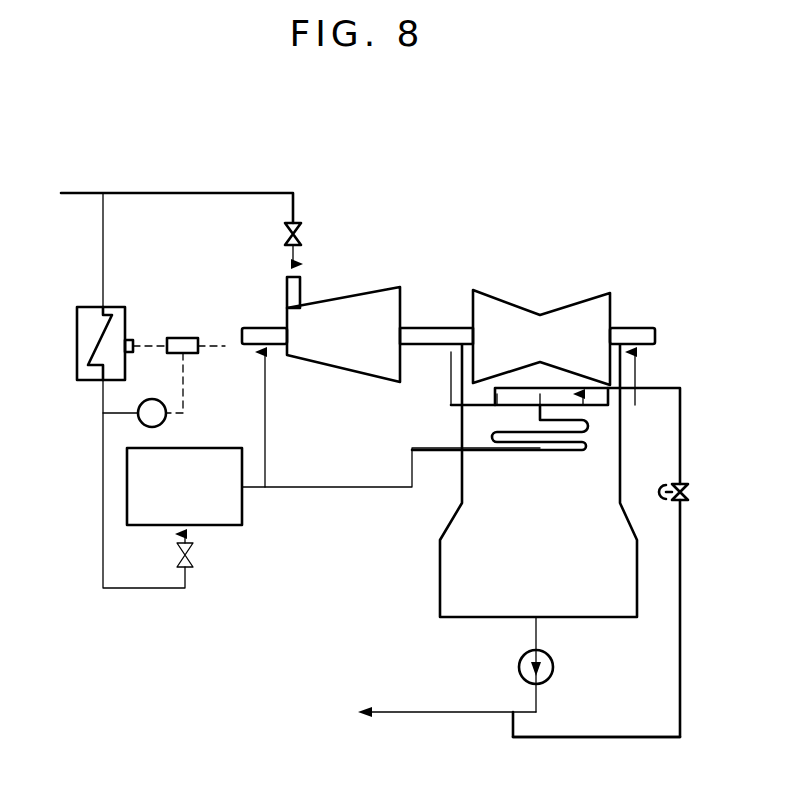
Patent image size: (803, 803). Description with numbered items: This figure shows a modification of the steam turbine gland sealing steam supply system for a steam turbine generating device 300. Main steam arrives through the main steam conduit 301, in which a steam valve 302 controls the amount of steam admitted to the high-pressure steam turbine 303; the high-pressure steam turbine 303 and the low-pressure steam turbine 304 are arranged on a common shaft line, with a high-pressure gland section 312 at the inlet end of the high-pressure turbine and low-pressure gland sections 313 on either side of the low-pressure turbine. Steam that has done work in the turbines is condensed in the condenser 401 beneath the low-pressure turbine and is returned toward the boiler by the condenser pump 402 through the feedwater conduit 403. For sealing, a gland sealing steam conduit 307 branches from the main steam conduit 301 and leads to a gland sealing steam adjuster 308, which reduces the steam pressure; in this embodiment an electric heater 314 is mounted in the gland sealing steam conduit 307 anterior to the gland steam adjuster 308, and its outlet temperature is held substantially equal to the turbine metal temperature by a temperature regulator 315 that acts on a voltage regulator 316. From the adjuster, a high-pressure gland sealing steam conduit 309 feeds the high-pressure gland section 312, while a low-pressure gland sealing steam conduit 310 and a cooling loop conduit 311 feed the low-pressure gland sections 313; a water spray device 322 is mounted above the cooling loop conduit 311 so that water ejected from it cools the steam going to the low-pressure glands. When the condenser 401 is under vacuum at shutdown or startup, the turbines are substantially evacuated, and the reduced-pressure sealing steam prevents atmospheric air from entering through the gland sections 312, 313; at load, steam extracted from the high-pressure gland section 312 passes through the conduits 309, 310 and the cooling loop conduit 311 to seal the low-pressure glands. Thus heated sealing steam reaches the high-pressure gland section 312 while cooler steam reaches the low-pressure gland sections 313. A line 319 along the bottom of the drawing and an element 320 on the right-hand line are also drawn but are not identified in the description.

The steam turbine generating device 300 is at (518, 253).
The main steam conduit 301 is at (76, 192).
The steam valve 302 is at (302, 232).
The high-pressure steam turbine 303 is at (326, 301).
The low-pressure steam turbine 304 is at (512, 306).
The gland sealing steam conduit 307 is at (103, 234).
The gland sealing steam adjuster 308 is at (243, 507).
The high-pressure gland sealing steam conduit 309 is at (267, 406).
The low-pressure gland sealing steam conduit 310 is at (636, 374).
The cooling loop conduit 311 is at (533, 452).
The high-pressure gland section 312 is at (262, 325).
The low-pressure gland sections 313 is at (435, 327).
The electric heater 314 is at (124, 308).
The temperature regulator 315 is at (152, 400).
The voltage regulator 316 is at (182, 338).
The return line 319 is at (598, 738).
The valve 320 is at (652, 494).
The water spray device 322 is at (569, 385).
The condenser 401 is at (604, 619).
The condenser pump 402 is at (553, 675).
The feedwater conduit 403 is at (478, 713).